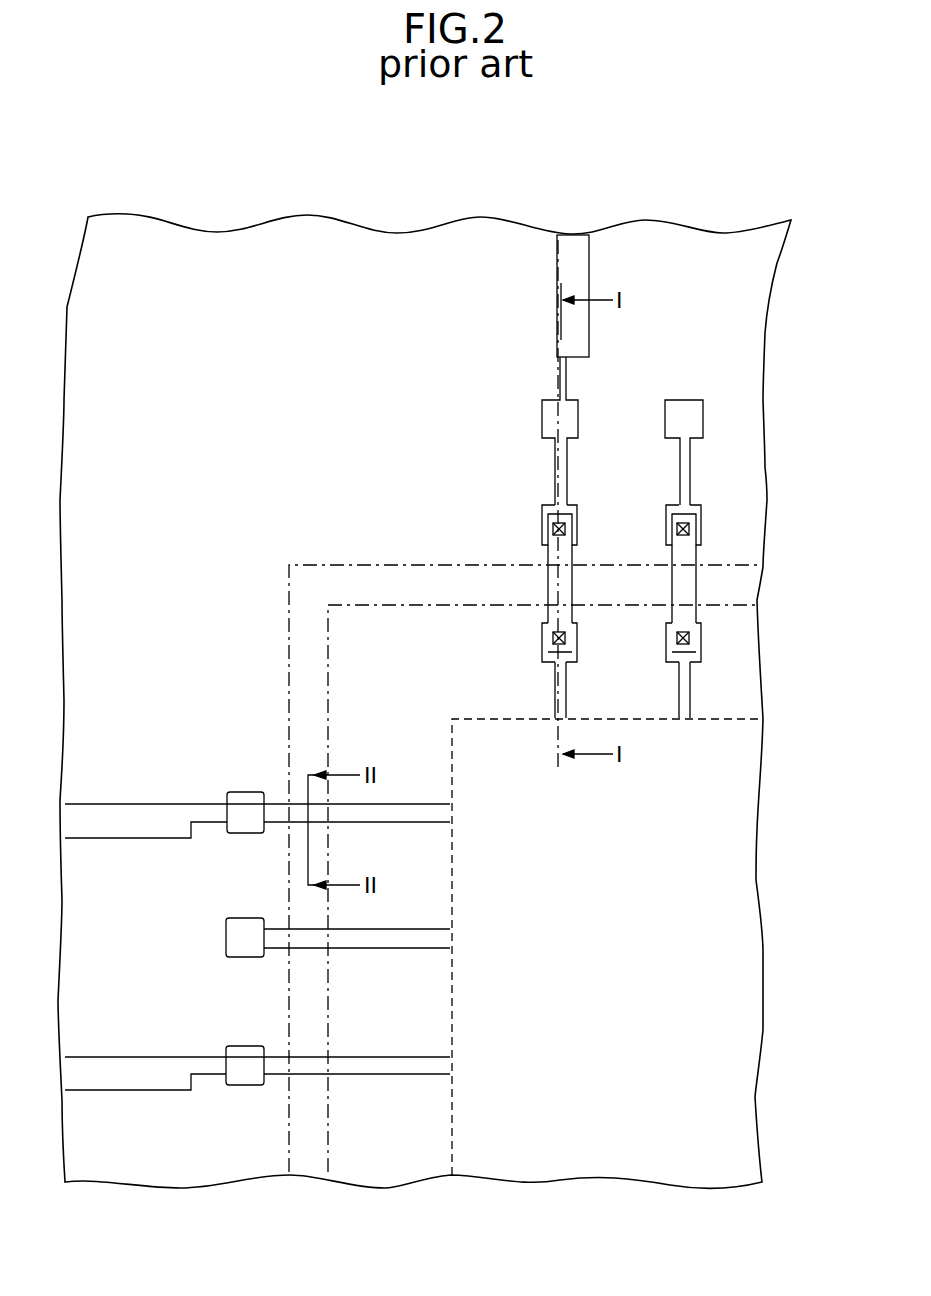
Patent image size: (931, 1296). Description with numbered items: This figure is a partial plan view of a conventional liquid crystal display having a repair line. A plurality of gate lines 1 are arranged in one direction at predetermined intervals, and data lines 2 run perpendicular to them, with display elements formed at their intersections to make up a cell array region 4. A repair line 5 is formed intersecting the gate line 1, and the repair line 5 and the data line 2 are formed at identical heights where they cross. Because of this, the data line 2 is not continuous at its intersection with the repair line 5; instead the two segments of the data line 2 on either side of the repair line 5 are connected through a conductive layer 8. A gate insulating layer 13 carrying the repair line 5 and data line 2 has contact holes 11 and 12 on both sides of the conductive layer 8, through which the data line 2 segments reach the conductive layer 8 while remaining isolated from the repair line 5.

The gate line 1 is at (413, 810).
The data line 2 is at (683, 693).
The cell array region 4 is at (128, 808).
The repair line 5 is at (572, 253).
The conductive layer 8 is at (667, 557).
The contact hole 11 is at (555, 527).
The contact hole 12 is at (555, 638).
The gate insulating layer 13 is at (663, 415).